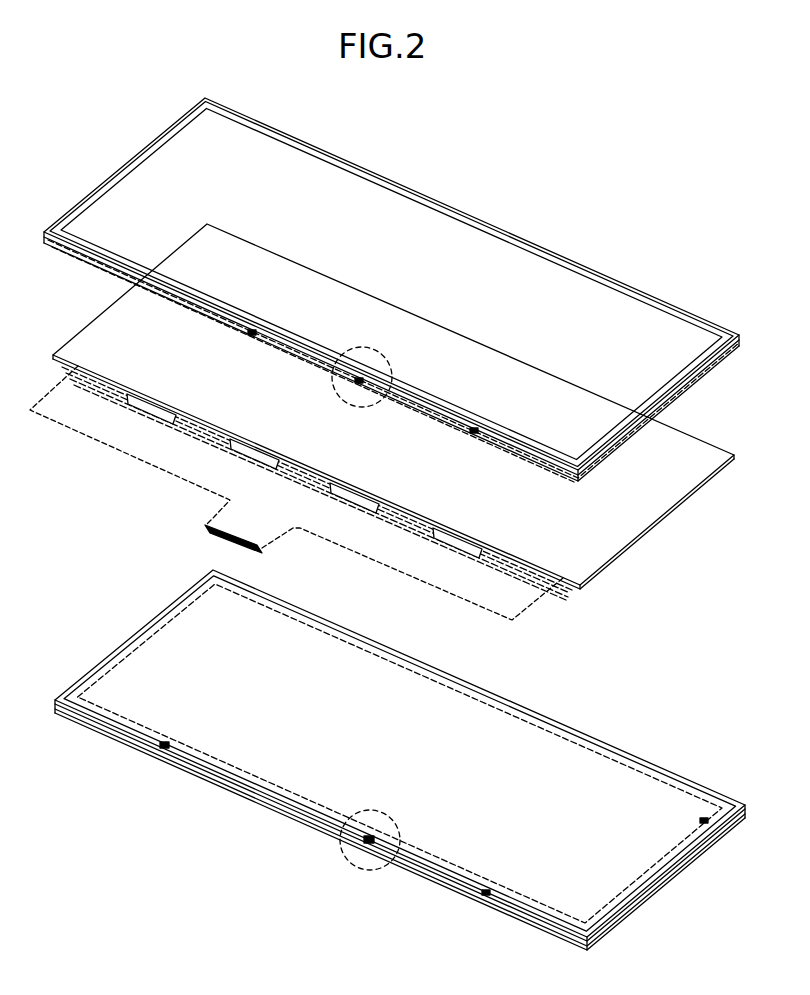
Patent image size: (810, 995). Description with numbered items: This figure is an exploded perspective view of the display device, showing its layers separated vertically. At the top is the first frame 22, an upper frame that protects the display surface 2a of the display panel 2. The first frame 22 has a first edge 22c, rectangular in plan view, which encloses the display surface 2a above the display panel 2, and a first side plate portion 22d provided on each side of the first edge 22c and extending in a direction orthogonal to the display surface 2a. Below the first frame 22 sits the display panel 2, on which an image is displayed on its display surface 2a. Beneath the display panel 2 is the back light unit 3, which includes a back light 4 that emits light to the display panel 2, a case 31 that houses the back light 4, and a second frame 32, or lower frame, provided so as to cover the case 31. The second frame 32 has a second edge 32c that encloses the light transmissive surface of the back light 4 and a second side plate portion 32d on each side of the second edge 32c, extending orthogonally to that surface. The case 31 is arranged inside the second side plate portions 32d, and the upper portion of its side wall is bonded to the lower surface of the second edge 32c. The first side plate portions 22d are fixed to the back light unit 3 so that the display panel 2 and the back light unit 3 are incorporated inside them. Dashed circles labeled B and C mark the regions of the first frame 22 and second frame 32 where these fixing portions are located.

The display panel 2 is at (393, 412).
The display surface 2a is at (613, 527).
The back light unit 3 is at (400, 760).
The back light 4 is at (563, 743).
The first frame 22 is at (391, 290).
The first edge 22c is at (366, 172).
The first side plate portion 22d is at (252, 333).
The case 31 is at (488, 898).
The second frame 32 is at (400, 762).
The second edge 32c is at (137, 729).
The second side plate portion 32d is at (213, 775).
The detail region B is at (362, 407).
The detail region C is at (368, 870).